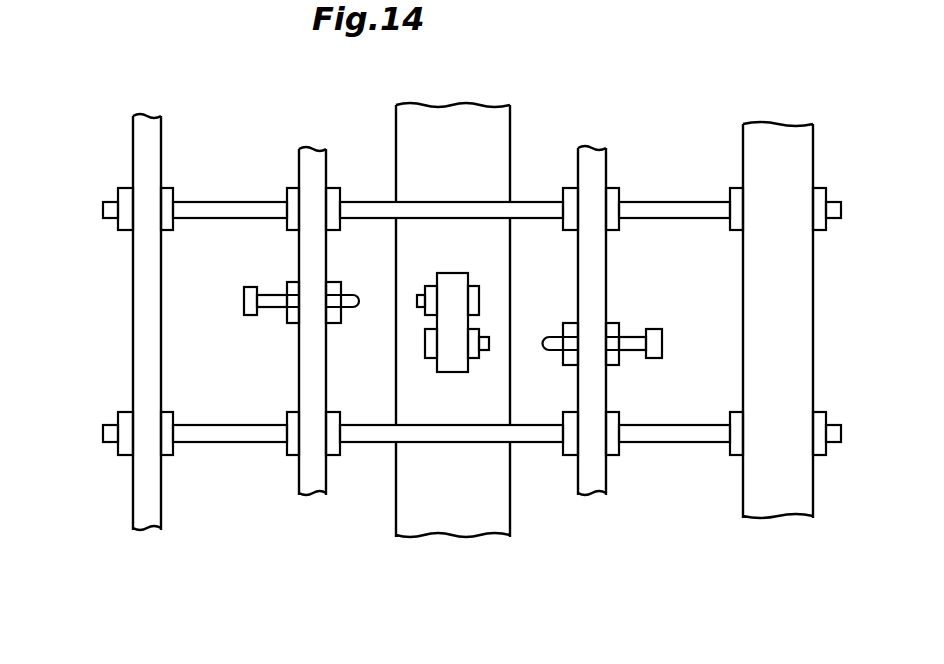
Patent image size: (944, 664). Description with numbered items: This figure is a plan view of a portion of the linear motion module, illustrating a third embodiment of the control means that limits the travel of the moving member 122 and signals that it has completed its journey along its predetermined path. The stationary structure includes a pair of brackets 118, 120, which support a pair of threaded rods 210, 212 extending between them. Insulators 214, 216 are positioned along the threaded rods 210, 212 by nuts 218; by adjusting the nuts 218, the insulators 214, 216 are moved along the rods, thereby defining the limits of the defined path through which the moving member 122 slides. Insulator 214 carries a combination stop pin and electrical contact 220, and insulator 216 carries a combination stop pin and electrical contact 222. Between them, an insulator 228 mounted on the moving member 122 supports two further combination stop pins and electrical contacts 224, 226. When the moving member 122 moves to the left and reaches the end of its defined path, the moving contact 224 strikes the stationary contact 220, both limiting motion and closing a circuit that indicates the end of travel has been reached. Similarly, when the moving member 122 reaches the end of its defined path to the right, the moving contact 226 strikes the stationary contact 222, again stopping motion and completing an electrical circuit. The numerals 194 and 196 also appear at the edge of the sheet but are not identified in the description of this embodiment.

The bracket 118 is at (813, 285).
The bracket 120 is at (162, 133).
The moving member 122 is at (510, 123).
The reference numeral (adjacent figure) 194 is at (593, 10).
The reference numeral (adjacent figure) 196 is at (825, 11).
The threaded rod 210 is at (220, 218).
The threaded rod 212 is at (225, 425).
The insulator 214 is at (326, 483).
The insulator 216 is at (606, 473).
The nuts 218 is at (287, 190).
The combination stop pin and electrical contact 220 is at (355, 307).
The combination stop pin and electrical contact 222 is at (552, 335).
The combination stop pin and electrical contact 224 is at (417, 300).
The combination stop pin and electrical contact 226 is at (489, 343).
The insulator 228 is at (448, 372).